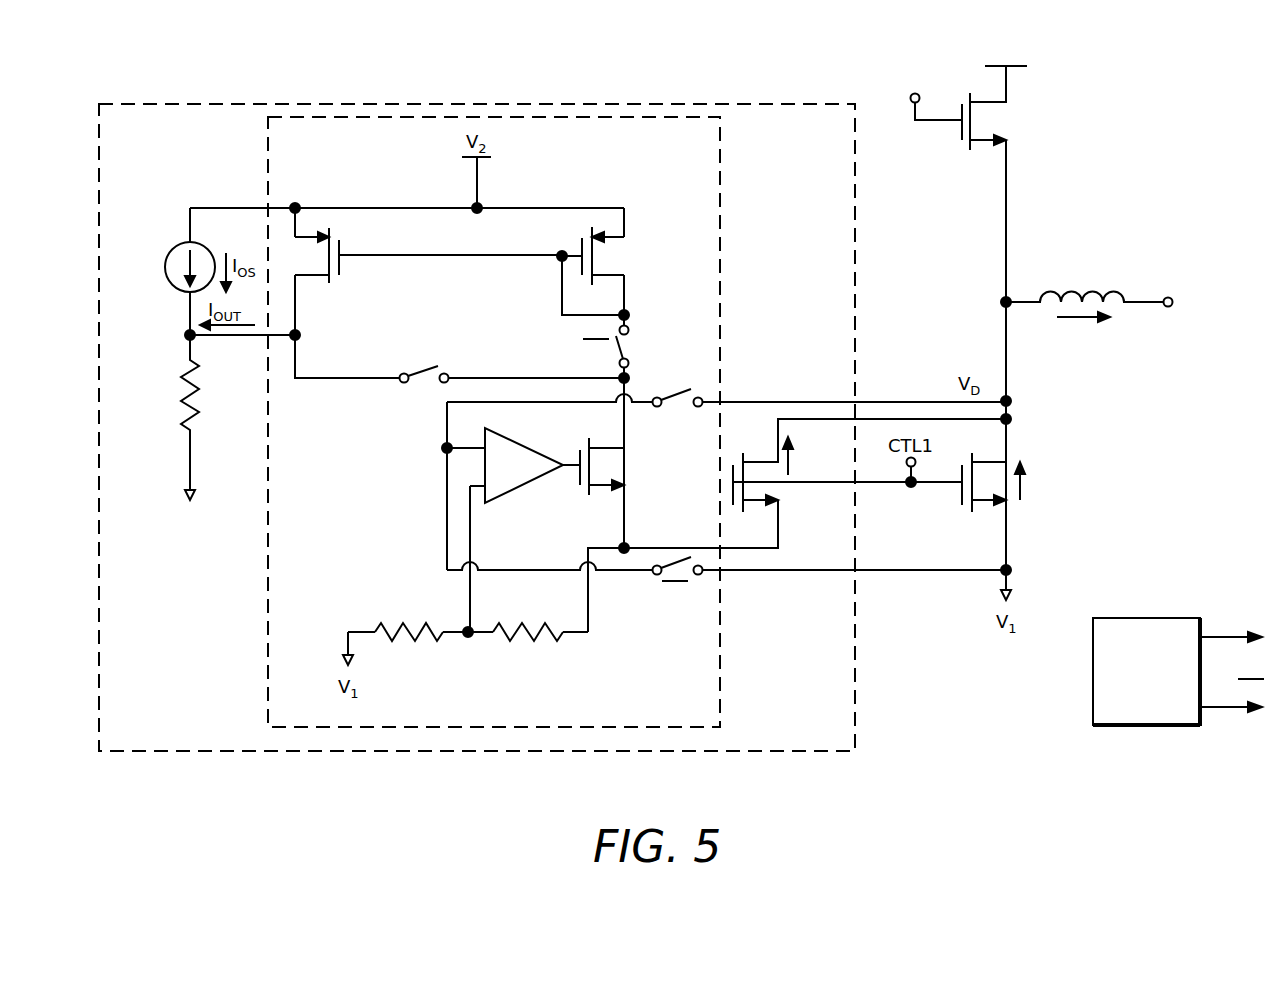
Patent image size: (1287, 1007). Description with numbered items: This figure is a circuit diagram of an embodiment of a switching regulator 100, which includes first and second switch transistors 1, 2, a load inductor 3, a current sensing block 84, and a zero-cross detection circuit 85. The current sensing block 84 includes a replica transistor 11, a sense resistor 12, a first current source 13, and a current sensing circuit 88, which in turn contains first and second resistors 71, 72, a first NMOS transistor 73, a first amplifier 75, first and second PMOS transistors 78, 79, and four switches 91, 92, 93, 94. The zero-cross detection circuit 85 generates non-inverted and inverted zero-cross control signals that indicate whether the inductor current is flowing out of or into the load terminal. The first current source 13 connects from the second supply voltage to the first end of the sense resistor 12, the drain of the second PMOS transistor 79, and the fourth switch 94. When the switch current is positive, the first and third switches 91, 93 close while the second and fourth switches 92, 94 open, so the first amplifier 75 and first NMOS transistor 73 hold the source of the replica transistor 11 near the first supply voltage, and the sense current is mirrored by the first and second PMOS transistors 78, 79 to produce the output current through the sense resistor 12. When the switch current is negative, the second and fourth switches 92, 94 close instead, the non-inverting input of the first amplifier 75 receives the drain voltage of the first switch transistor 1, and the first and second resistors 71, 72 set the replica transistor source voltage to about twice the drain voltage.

The current sensing block 84 is at (137, 104).
The current sensing circuit 88 is at (720, 157).
The first current source 13 is at (172, 250).
The sense resistor 12 is at (198, 395).
The second PMOS transistor 79 is at (332, 283).
The first PMOS transistor 78 is at (594, 263).
The third switch 93 is at (630, 348).
The fourth switch 94 is at (402, 366).
The second switch 92 is at (678, 407).
The first NMOS transistor 73 is at (593, 475).
The first amplifier 75 is at (508, 496).
The first switch 91 is at (678, 562).
The first resistor 71 is at (432, 645).
The second resistor 72 is at (550, 645).
The replica transistor 11 is at (735, 468).
The first switch transistor 1 is at (960, 498).
The second switch transistor 2 is at (960, 140).
The load inductor 3 is at (1090, 290).
The switching regulator 100 is at (1142, 207).
The zero-cross detection circuit 85 is at (1133, 618).